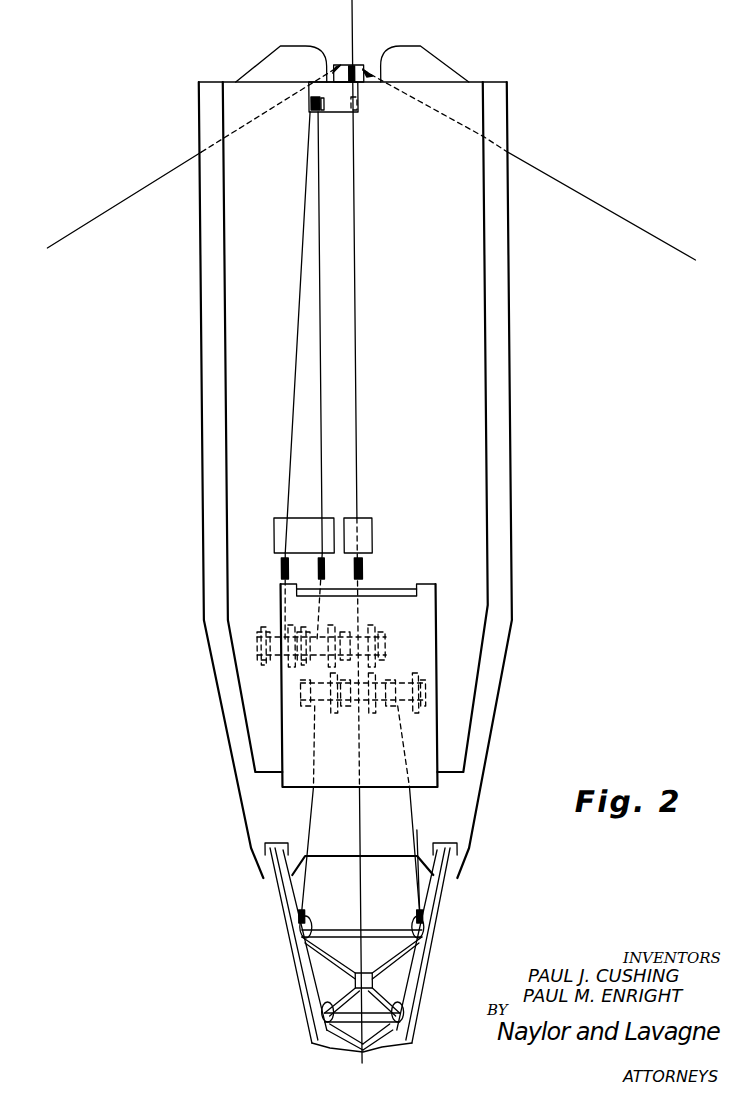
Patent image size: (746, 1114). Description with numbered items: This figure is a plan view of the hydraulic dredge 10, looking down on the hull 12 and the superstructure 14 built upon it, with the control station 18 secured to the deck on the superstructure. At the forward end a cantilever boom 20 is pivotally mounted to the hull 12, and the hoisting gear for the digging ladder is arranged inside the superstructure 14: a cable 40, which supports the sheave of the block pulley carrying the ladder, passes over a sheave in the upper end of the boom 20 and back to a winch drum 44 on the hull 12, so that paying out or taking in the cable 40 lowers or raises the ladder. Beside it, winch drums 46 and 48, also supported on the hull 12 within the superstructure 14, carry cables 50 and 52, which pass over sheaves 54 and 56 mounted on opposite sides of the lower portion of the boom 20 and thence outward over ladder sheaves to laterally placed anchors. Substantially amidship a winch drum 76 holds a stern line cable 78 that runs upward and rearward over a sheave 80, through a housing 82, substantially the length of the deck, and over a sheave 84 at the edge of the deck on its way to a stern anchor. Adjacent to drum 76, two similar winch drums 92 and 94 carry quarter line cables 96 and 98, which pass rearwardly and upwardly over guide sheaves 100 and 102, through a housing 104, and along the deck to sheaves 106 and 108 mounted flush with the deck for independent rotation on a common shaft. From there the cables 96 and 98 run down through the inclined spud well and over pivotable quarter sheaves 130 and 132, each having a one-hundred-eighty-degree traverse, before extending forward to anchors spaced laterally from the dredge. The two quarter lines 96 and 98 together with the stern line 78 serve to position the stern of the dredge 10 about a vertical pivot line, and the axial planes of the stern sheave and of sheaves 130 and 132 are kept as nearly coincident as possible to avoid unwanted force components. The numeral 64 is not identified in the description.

The hydraulic dredge 10 is at (386, 462).
The hull 12 is at (507, 530).
The superstructure 14 is at (483, 478).
The control station 18 is at (275, 690).
The cantilever boom 20 is at (296, 988).
The cable 40 is at (352, 825).
The winch drum 44 is at (347, 706).
The winch drum 46 is at (306, 706).
The winch drum 48 is at (394, 706).
The cable 50 is at (305, 817).
The cable 52 is at (407, 810).
The sheave 54 is at (311, 910).
The sheave 56 is at (409, 914).
The right cable portion 64 is at (409, 830).
The winch drum 76 is at (370, 645).
The cable 78 is at (353, 403).
The sheave 80 is at (357, 572).
The housing 82 is at (366, 532).
The sheave 84 is at (357, 106).
The winch drum 92 is at (312, 632).
The winch drum 94 is at (265, 632).
The cable 96 is at (633, 225).
The cable 98 is at (291, 381).
The guide sheave 100 is at (313, 572).
The guide sheave 102 is at (275, 570).
The housing 104 is at (271, 524).
The sheave 106 is at (321, 108).
The sheave 108 is at (312, 100).
The pivotable sheave 130 is at (364, 68).
The pivotable sheave 132 is at (333, 64).